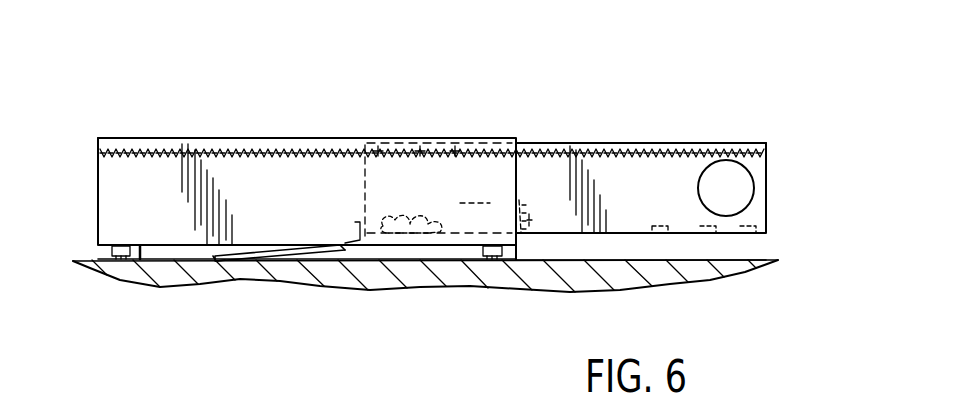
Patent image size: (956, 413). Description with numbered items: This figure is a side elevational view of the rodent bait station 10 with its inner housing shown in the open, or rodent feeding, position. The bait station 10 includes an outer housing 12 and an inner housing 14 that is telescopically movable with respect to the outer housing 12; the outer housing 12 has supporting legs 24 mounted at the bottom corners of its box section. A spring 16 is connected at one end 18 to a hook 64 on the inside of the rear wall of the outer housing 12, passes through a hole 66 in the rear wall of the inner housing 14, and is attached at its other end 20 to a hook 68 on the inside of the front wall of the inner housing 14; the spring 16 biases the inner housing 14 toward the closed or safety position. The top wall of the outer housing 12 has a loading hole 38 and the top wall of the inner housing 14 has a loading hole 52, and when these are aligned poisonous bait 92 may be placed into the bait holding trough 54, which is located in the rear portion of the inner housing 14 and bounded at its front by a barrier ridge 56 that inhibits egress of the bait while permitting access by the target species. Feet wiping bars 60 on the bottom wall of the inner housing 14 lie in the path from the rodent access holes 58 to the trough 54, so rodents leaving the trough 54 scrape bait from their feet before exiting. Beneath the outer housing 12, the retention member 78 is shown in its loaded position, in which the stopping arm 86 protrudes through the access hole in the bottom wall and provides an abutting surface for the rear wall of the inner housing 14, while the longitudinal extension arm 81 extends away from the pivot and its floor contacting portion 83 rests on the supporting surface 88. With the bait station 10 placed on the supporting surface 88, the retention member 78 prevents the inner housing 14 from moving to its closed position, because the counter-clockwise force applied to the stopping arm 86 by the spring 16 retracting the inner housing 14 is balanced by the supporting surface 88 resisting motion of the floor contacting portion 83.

The rodent bait station 10 is at (668, 48).
The outer housing 12 is at (284, 138).
The inner housing 14 is at (638, 143).
The spring 16 is at (240, 148).
The one end 18 is at (112, 150).
The other end 20 is at (748, 143).
The supporting legs 24 is at (108, 260).
The loading hole 38 is at (458, 138).
The loading hole 52 is at (405, 142).
The bait holding trough 54 is at (449, 202).
The barrier ridge 56 is at (527, 220).
The rodent access holes 58 is at (736, 182).
The feet wiping bars 60 is at (655, 234).
The hook 64 is at (100, 154).
The hole 66 is at (358, 150).
The hook 68 is at (766, 150).
The retention member 78 is at (348, 250).
The longitudinal extension arm 81 is at (300, 256).
The floor contacting portion 83 is at (215, 259).
The stopping arm 86 is at (352, 220).
The supporting surface 88 is at (160, 275).
The poisonous bait 92 is at (443, 250).